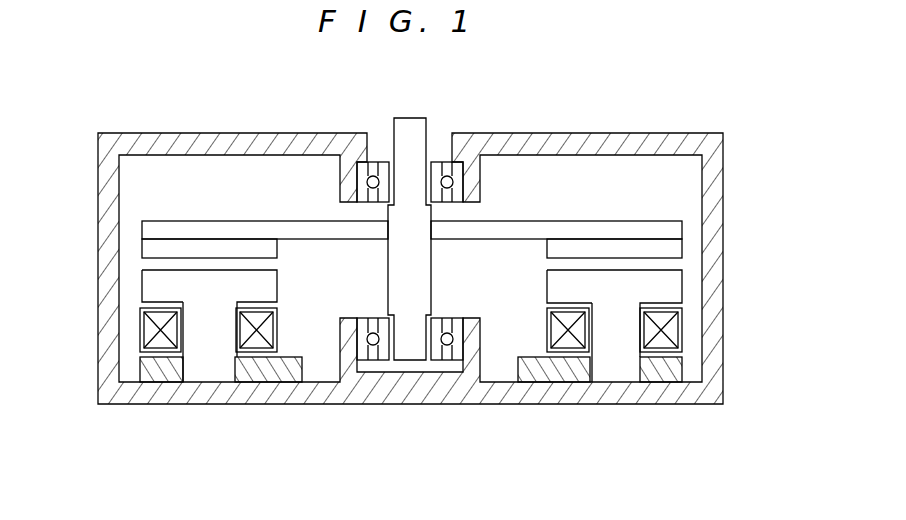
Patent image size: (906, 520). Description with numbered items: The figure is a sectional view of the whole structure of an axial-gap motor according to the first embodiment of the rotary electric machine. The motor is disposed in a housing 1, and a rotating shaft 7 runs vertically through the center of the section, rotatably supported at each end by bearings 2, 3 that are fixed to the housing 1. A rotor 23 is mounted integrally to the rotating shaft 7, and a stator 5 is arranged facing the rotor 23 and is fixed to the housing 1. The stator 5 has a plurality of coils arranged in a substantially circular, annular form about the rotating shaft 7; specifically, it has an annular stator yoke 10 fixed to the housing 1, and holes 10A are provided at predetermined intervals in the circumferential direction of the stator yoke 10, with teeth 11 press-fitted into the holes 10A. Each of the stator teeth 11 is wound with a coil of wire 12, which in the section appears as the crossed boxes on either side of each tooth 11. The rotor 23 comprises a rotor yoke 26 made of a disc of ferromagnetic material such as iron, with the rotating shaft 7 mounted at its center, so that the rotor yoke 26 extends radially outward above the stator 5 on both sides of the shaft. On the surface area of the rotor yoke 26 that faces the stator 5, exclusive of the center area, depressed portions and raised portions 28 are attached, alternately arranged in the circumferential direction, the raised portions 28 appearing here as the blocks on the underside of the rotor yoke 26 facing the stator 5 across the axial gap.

The housing 1 is at (408, 393).
The bearing 2 is at (460, 173).
The bearing 3 is at (457, 322).
The stator 5 is at (416, 370).
The rotating shaft 7 is at (417, 132).
The stator yoke 10 is at (562, 372).
The hole 10A is at (225, 370).
The tooth 11 is at (208, 352).
The coil of wire 12 is at (145, 328).
The rotor 23 is at (593, 214).
The rotor yoke 26 is at (281, 228).
The raised portion 28 is at (157, 247).